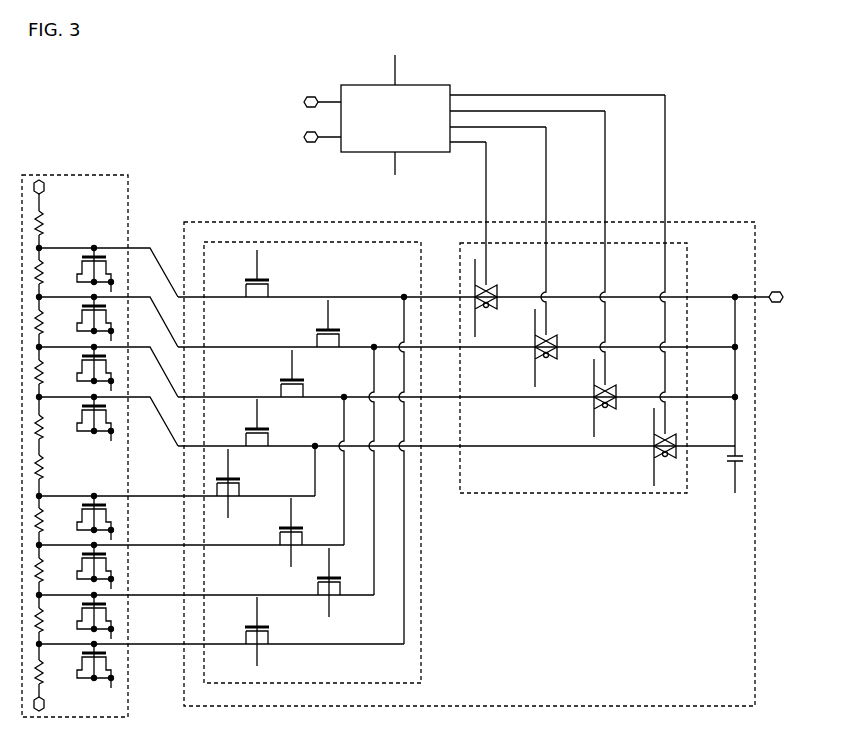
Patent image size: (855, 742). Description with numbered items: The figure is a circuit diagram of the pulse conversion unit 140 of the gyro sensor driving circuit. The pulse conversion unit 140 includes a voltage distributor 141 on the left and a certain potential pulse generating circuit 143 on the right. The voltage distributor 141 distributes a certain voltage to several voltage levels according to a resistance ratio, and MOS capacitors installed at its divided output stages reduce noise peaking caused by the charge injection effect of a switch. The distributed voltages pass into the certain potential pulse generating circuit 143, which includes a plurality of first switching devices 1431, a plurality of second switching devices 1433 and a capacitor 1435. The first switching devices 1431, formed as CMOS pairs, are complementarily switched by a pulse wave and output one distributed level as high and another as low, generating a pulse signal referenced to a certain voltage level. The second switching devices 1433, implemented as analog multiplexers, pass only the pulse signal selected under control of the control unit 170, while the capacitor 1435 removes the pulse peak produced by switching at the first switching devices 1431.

The pulse conversion unit 140 is at (280, 117).
The voltage distributor 141 is at (77, 175).
The certain potential pulse generating circuit 143 is at (258, 222).
The control unit 170 is at (452, 90).
The first switching devices 1431 is at (421, 600).
The second switching devices 1433 is at (565, 493).
The capacitor 1435 is at (728, 465).